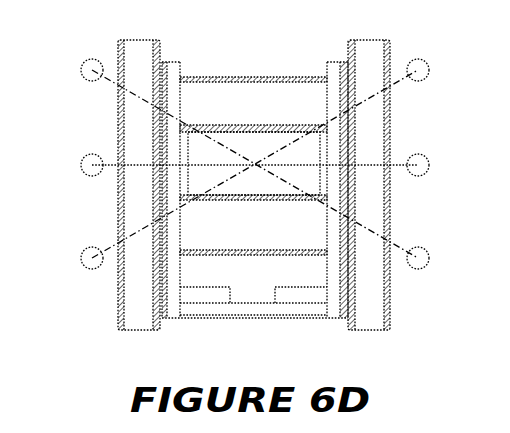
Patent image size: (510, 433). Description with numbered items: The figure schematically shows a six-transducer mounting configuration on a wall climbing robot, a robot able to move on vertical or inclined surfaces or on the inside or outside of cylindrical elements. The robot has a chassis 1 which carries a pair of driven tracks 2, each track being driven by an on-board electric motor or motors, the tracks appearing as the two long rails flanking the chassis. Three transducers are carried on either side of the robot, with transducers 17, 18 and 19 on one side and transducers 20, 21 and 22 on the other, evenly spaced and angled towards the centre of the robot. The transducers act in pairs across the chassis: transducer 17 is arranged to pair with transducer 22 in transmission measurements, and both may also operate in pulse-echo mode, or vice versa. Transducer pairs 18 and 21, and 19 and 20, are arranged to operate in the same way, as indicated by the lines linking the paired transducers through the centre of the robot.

The chassis 1 is at (248, 310).
The driven tracks 2 is at (137, 309).
The transducer 17 is at (85, 60).
The transducer 18 is at (85, 154).
The transducer 19 is at (86, 246).
The transducer 20 is at (416, 60).
The transducer 21 is at (416, 154).
The transducer 22 is at (418, 246).